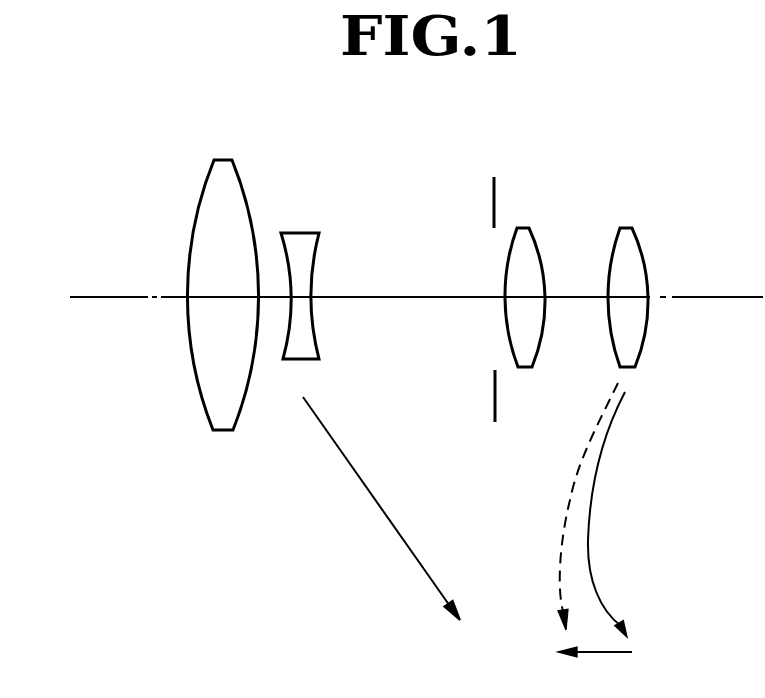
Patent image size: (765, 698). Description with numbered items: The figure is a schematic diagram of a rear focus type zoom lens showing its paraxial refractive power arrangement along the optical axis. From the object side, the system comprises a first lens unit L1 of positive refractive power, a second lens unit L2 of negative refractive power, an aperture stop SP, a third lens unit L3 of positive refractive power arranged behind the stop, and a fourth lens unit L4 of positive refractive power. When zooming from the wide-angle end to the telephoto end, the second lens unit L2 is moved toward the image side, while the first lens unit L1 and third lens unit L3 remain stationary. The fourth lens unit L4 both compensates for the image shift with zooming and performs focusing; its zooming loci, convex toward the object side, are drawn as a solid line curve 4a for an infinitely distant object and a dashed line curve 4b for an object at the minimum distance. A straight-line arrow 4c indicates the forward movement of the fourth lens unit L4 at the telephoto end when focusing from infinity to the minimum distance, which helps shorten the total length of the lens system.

The first lens unit L1 is at (228, 158).
The second lens unit L2 is at (305, 232).
The third lens unit L3 is at (524, 226).
The fourth lens unit L4 is at (624, 226).
The aperture stop SP is at (493, 186).
The solid line curve 4a is at (586, 500).
The dashed line curve 4b is at (563, 509).
The straight-line arrow 4c is at (620, 652).